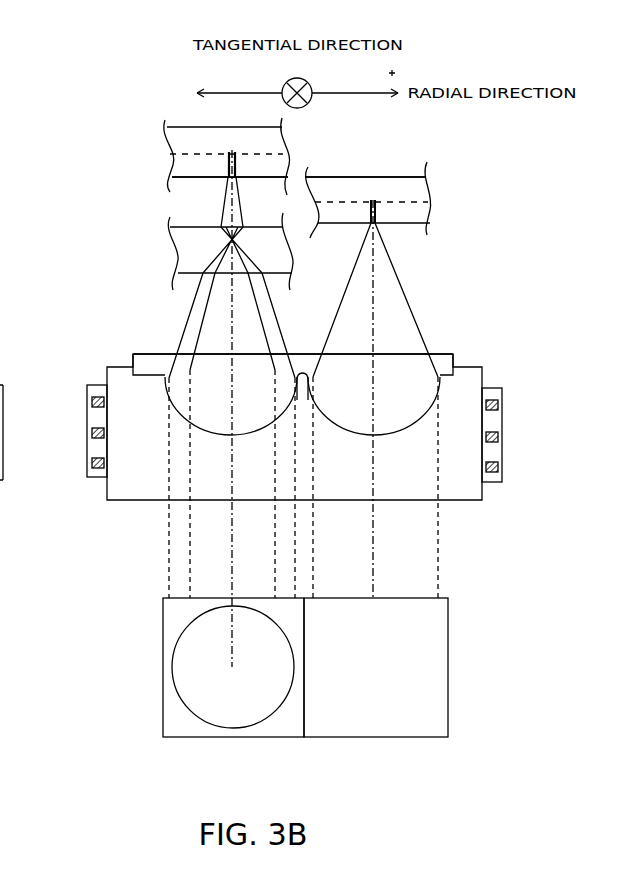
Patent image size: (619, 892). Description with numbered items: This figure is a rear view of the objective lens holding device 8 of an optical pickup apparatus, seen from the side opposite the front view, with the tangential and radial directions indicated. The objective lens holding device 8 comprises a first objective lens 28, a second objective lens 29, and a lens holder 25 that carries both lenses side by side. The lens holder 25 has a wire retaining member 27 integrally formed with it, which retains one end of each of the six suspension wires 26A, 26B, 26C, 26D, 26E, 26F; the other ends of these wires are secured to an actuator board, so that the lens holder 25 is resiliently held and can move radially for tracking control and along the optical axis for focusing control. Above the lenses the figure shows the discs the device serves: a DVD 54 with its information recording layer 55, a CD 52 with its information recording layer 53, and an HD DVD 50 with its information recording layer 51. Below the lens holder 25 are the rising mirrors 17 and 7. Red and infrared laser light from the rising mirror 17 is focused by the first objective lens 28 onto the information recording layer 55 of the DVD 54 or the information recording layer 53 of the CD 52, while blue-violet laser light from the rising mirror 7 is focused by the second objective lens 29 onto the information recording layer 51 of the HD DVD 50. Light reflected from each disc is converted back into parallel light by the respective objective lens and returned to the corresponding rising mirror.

The DVD 54 is at (176, 127).
The information recording layer 55 is at (170, 154).
The CD 52 is at (173, 178).
The information recording layer 53 is at (170, 228).
The information recording layer 51 is at (430, 200).
The HD DVD 50 is at (390, 177).
The lens holder 25 is at (459, 500).
The objective lens holding device 8 is at (482, 367).
The first objective lens 28 is at (216, 437).
The second objective lens 29 is at (342, 437).
The wire retaining member 27 is at (87, 385).
The suspension wire 26A is at (502, 400).
The suspension wire 26B is at (502, 432).
The suspension wire 26C is at (502, 462).
The suspension wire 26D is at (88, 402).
The suspension wire 26E is at (88, 433).
The suspension wire 26F is at (88, 463).
The rising mirror 17 is at (228, 740).
The rising mirror 7 is at (368, 740).